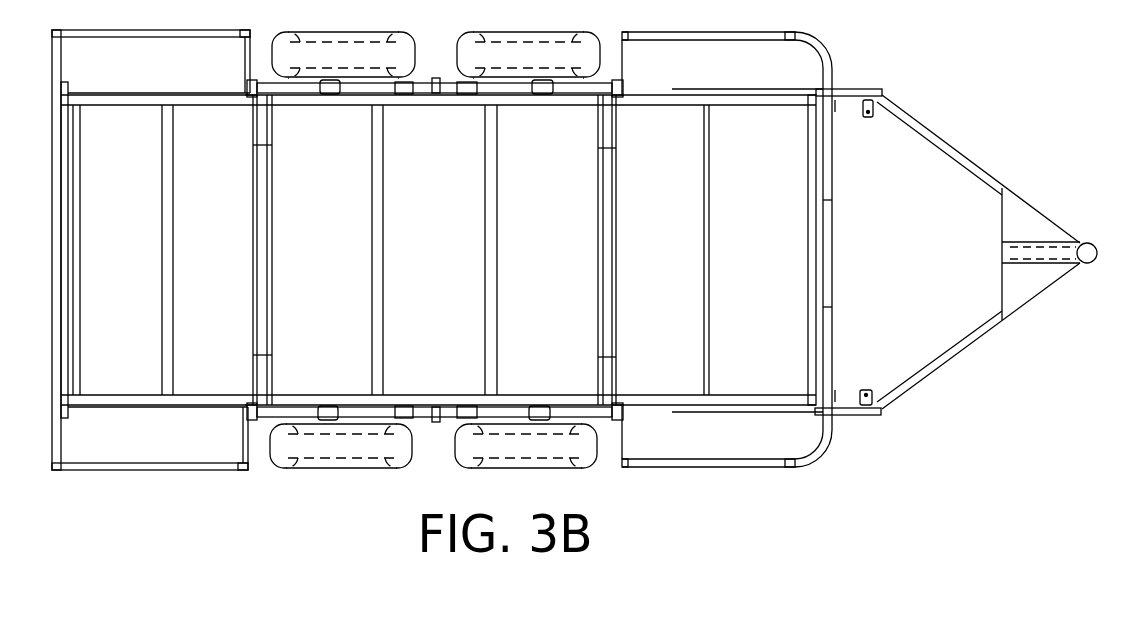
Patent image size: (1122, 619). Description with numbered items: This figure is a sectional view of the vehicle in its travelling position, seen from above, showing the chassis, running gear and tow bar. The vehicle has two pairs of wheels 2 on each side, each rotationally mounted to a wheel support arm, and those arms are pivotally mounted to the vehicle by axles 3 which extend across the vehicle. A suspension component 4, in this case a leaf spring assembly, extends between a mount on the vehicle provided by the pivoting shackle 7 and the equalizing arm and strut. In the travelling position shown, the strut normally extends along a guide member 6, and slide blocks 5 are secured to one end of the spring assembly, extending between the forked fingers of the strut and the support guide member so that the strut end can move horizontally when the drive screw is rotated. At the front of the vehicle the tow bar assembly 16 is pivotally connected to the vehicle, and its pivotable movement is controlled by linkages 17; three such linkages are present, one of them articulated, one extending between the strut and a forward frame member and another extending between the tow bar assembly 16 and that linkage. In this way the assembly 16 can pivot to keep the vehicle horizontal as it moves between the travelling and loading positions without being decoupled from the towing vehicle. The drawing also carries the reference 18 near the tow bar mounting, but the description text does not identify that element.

The wheels 2 is at (408, 47).
The axles 3 is at (260, 145).
The suspension component 4 is at (353, 95).
The slide blocks 5 is at (247, 82).
The guide member 6 is at (245, 99).
The pivoting shackle 7 is at (436, 250).
The tow bar assembly 16 is at (952, 162).
The linkages 17 is at (852, 88).
The tongue bracket 18 is at (867, 120).